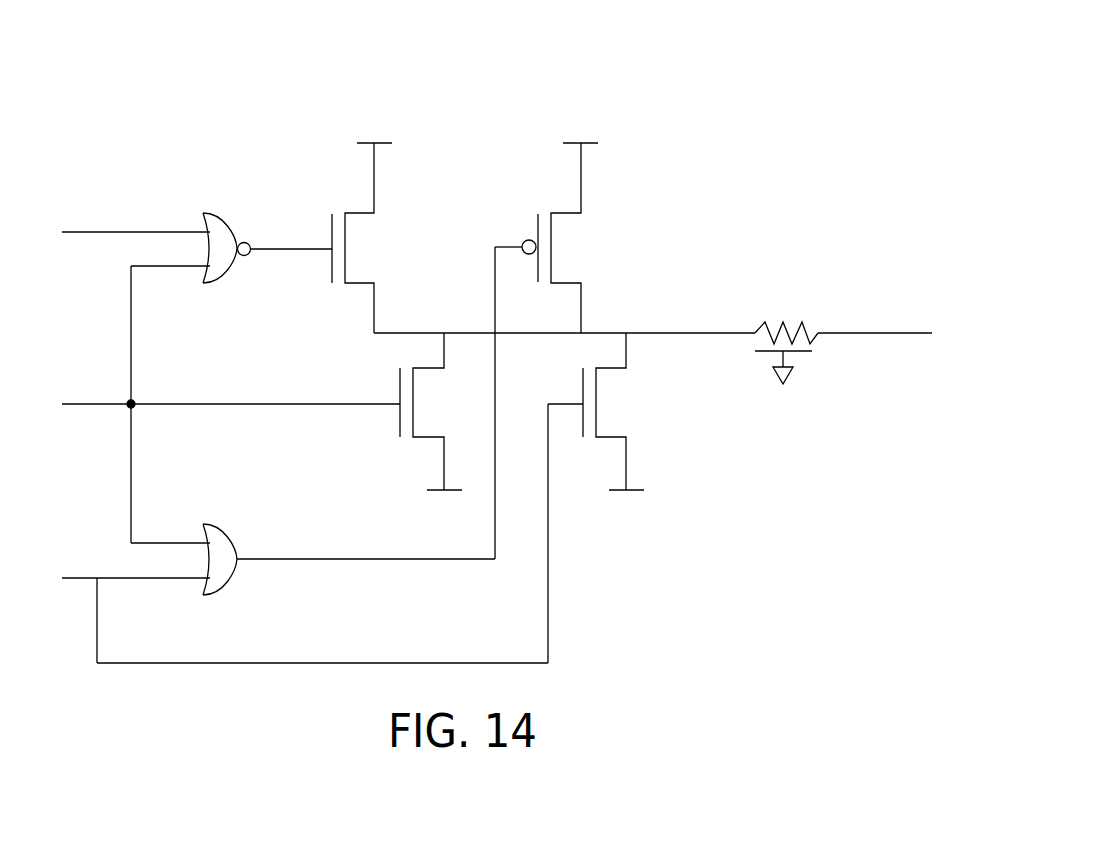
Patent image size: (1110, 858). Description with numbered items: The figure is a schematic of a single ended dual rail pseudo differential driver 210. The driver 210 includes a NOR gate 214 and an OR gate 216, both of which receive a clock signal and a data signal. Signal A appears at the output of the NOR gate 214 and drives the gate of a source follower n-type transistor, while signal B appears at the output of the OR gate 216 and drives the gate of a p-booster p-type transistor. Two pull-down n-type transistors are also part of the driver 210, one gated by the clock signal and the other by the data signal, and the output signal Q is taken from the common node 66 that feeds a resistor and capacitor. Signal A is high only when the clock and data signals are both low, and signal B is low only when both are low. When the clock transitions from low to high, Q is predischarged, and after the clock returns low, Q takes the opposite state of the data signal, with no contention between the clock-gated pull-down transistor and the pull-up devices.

The single ended dual rail pseudo differential driver 210 is at (196, 122).
The NOR gate 214 is at (232, 265).
The OR gate 216 is at (235, 577).
The output node Q 66 is at (705, 334).